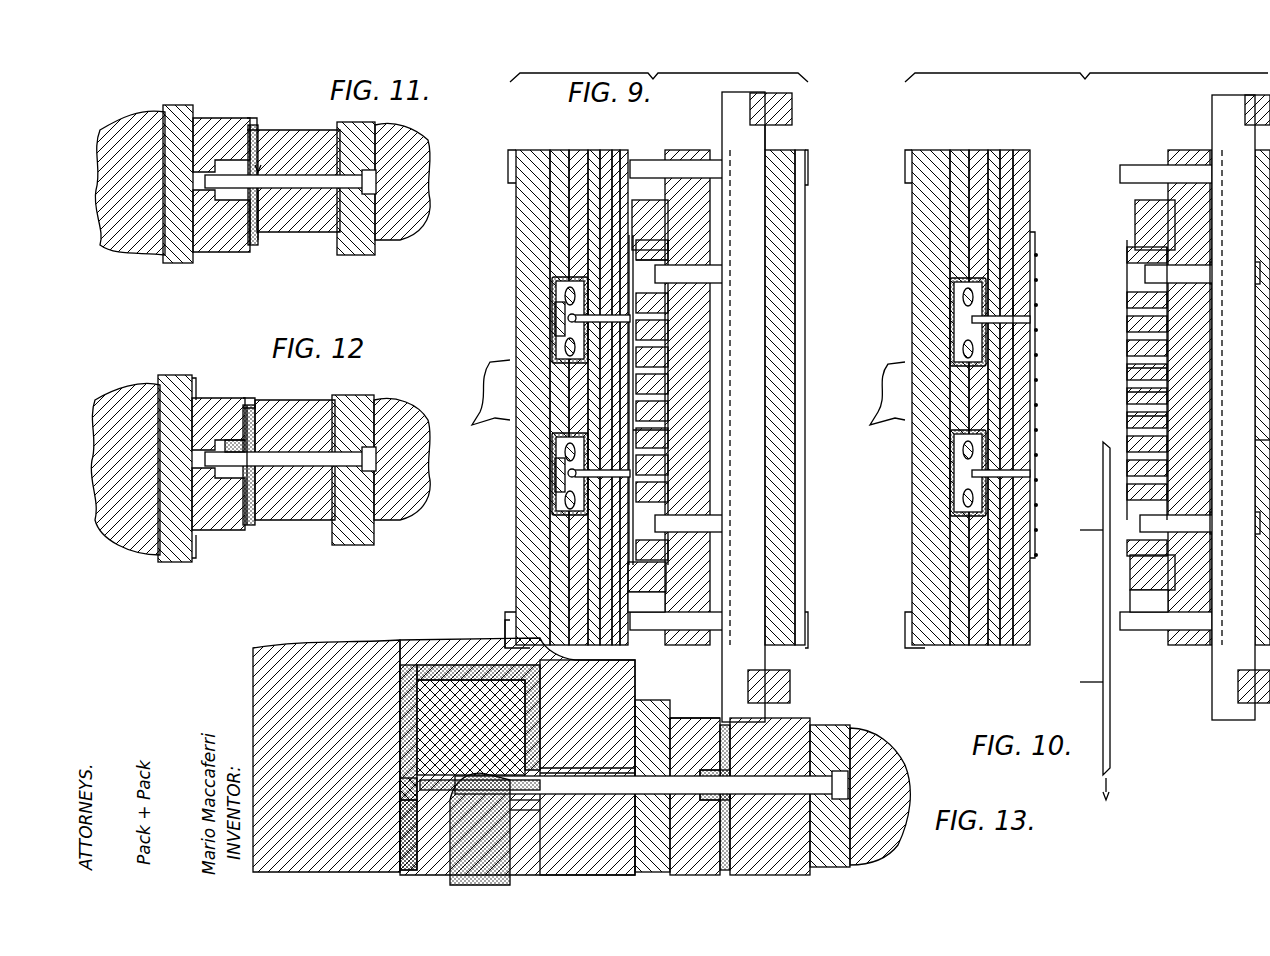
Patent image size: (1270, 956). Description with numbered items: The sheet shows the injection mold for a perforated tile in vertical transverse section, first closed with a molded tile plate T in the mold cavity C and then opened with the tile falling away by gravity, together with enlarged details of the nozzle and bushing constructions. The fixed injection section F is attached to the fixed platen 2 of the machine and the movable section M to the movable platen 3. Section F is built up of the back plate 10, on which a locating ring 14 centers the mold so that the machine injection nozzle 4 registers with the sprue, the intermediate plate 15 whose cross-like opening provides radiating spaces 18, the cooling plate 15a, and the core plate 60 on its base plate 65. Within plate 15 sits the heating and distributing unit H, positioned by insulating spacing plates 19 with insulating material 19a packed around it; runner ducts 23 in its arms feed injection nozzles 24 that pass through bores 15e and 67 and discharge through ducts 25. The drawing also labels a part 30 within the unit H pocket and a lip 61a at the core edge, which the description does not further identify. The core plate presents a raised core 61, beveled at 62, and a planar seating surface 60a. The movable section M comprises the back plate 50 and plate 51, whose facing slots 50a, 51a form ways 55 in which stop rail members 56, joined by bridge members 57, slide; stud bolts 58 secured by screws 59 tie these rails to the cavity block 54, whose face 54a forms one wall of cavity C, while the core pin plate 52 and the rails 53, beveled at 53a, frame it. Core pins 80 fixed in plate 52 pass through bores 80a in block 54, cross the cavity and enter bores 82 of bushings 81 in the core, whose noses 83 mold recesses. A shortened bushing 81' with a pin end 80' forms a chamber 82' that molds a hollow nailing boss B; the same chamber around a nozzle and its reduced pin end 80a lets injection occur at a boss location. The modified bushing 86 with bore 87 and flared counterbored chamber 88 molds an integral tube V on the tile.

In FIG. 9, the fixed platen 2 is at (508, 165).
In FIG. 10, the fixed platen 2 is at (905, 163).
In FIG. 13, the fixed platen 2 is at (505, 625).
In FIG. 9, the movable platen 3 is at (808, 166).
In FIG. 10, the movable platen 3 is at (905, 640).
In FIG. 9, the injection nozzle 4 is at (485, 385).
In FIG. 10, the injection nozzle 4 is at (880, 370).
In FIG. 9, the back plate 10 is at (528, 520).
In FIG. 10, the back plate 10 is at (922, 590).
In FIG. 13, the back plate 10 is at (268, 650).
In FIG. 9, the locating ring 14 is at (555, 352).
In FIG. 9, the intermediate plate 15 is at (560, 160).
In FIG. 13, the intermediate plate 15 is at (432, 660).
In FIG. 9, the cooling plate 15a is at (596, 160).
In FIG. 13, the cooling plate 15a is at (600, 700).
In FIG. 13, the bore 15e is at (605, 768).
In FIG. 13, the spaces 18 is at (405, 665).
In FIG. 9, the spacing plates 19 is at (560, 472).
In FIG. 13, the spacing plates 19 is at (400, 790).
In FIG. 13, the heat insulating material 19a is at (408, 835).
In FIG. 9, the runner duct 23 is at (568, 318).
In FIG. 13, the runner duct 23 is at (480, 829).
In FIG. 13, the injection nozzle 24 is at (560, 800).
In FIG. 9, the discharge duct 25 is at (556, 292).
In FIG. 13, the discharge duct 25 is at (590, 810).
In FIG. 9, the sealing ring 30 is at (565, 296).
In FIG. 9, the back plate 50 is at (778, 262).
In FIG. 10, the back plate 50 is at (1262, 330).
In FIG. 10, the slots 50a is at (1222, 184).
In FIG. 9, the plate 51 is at (680, 152).
In FIG. 10, the plate 51 is at (1172, 155).
In FIG. 10, the slots 51a is at (1215, 240).
In FIG. 11, the core pin mounting plate 52 is at (355, 230).
In FIG. 12, the core pin mounting plate 52 is at (355, 515).
In FIG. 9, the core pin mounting plate 52 is at (660, 320).
In FIG. 10, the core pin mounting plate 52 is at (1170, 318).
In FIG. 13, the core pin mounting plate 52 is at (830, 760).
In FIG. 9, the rails 53 is at (647, 587).
In FIG. 10, the rails 53 is at (1160, 580).
In FIG. 9, the bevels 53a is at (672, 235).
In FIG. 10, the bevels 53a is at (1145, 230).
In FIG. 9, the cavity block 54 is at (668, 420).
In FIG. 10, the cavity block 54 is at (1125, 400).
In FIG. 13, the cavity block 54 is at (820, 740).
In FIG. 10, the cavity surface 54a is at (1125, 375).
In FIG. 10, the ways 55 is at (1262, 440).
In FIG. 9, the stop rail member 56 is at (745, 578).
In FIG. 10, the stop rail member 56 is at (1228, 662).
In FIG. 9, the bridge members 57 is at (792, 108).
In FIG. 10, the bridge members 57 is at (1240, 728).
In FIG. 9, the stud bolts 58 is at (692, 272).
In FIG. 10, the stud bolts 58 is at (1195, 272).
In FIG. 10, the screw 59 is at (1212, 284).
In FIG. 9, the core plate 60 is at (625, 152).
In FIG. 13, the core plate 60 is at (650, 705).
In FIG. 10, the seating surface 60a is at (1025, 205).
In FIG. 11, the core 61 is at (240, 235).
In FIG. 12, the core 61 is at (250, 410).
In FIG. 10, the core 61 is at (1036, 240).
In FIG. 13, the core 61 is at (678, 720).
In FIG. 11, the gasket lip 61a is at (250, 120).
In FIG. 12, the gasket lip 61a is at (245, 400).
In FIG. 10, the bevels 62 is at (1036, 255).
In FIG. 9, the base plate 65 is at (616, 152).
In FIG. 13, the bore 67 is at (675, 730).
In FIG. 11, the core pins 80 is at (317, 188).
In FIG. 12, the core pins 80 is at (317, 471).
In FIG. 9, the core pins 80 is at (693, 437).
In FIG. 10, the core pins 80 is at (1185, 386).
In FIG. 13, the core pins 80 is at (880, 794).
In FIG. 12, the reduced diameter extended end 80' is at (173, 487).
In FIG. 10, the bores 80a is at (1127, 305).
In FIG. 13, the bores 80a is at (790, 750).
In FIG. 10, the bushings 81 is at (1006, 425).
In FIG. 12, the bushing 81' is at (141, 477).
In FIG. 13, the bores 82 is at (634, 793).
In FIG. 12, the chamber 82' is at (205, 432).
In FIG. 11, the frustro-conical nose 83 is at (265, 160).
In FIG. 10, the frustro-conical nose 83 is at (1030, 435).
In FIG. 11, the bushing 86 is at (130, 240).
In FIG. 11, the core pin receiving bore 87 is at (170, 255).
In FIG. 11, the tube molding chamber 88 is at (238, 135).
In FIG. 12, the nailing boss B is at (248, 520).
In FIG. 13, the nailing boss B is at (690, 740).
In FIG. 11, the mold cavity C is at (262, 210).
In FIG. 12, the mold cavity C is at (262, 420).
In FIG. 9, the mold cavity C is at (668, 372).
In FIG. 10, the mold cavity C is at (1125, 360).
In FIG. 13, the mold cavity C is at (732, 725).
In FIG. 10, the fixed injection section F is at (1005, 152).
In FIG. 9, the heating and distributing unit H is at (552, 320).
In FIG. 10, the heating and distributing unit H is at (950, 305).
In FIG. 13, the heating and distributing unit H is at (425, 680).
In FIG. 9, the movable mold section M is at (800, 340).
In FIG. 10, the movable mold section M is at (1197, 134).
In FIG. 11, the tile plate T is at (253, 140).
In FIG. 12, the tile plate T is at (258, 500).
In FIG. 9, the tile plate T is at (668, 338).
In FIG. 10, the tile plate T is at (1118, 705).
In FIG. 11, the tube V is at (262, 166).